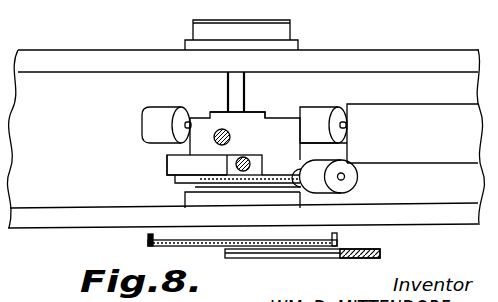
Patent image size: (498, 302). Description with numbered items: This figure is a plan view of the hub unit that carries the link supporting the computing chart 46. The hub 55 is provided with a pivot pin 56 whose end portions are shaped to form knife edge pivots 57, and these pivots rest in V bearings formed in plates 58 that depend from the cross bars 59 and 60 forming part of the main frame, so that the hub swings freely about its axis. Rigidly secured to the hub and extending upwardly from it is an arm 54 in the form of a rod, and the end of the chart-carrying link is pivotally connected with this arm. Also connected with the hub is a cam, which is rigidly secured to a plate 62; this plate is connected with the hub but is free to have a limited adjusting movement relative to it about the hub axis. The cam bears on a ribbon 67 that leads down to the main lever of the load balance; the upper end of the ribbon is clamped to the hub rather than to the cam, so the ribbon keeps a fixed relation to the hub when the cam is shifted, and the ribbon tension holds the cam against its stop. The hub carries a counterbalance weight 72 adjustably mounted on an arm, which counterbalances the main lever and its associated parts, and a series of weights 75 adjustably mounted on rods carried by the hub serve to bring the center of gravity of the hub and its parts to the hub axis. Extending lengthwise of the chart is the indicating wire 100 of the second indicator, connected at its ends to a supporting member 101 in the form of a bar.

The chart 46 is at (147, 244).
The arm 54 is at (213, 138).
The hub 55 is at (245, 160).
The pivot pin 56 is at (263, 111).
The knife edge pivots 57 is at (229, 90).
The plates 58 is at (298, 44).
The cross bar 59 is at (380, 58).
The cross bar 60 is at (426, 212).
The plate 62 is at (185, 180).
The ribbon 67 is at (175, 163).
The weight 72 is at (412, 133).
The weights 75 is at (156, 112).
The wire 100 is at (13, 26).
The supporting member 101 is at (357, 258).